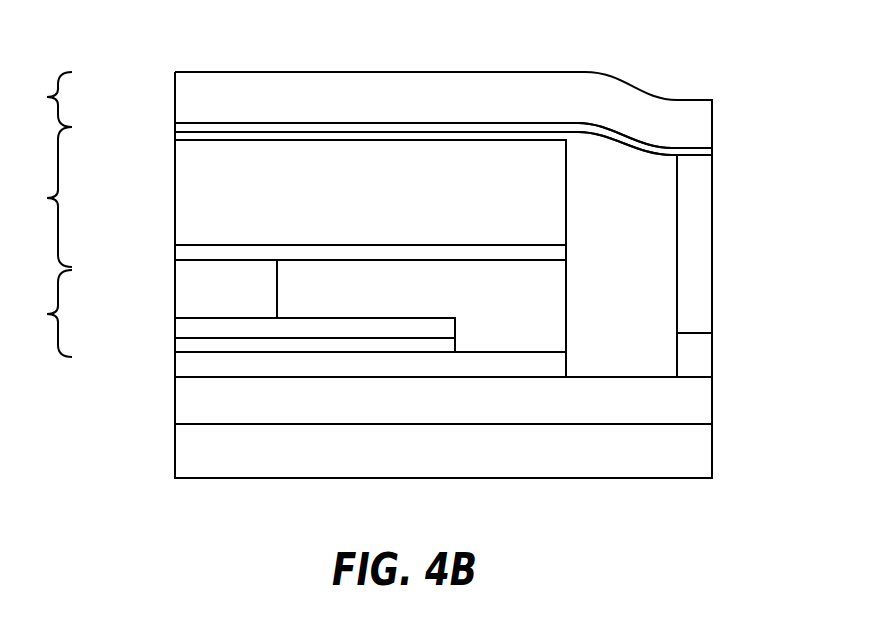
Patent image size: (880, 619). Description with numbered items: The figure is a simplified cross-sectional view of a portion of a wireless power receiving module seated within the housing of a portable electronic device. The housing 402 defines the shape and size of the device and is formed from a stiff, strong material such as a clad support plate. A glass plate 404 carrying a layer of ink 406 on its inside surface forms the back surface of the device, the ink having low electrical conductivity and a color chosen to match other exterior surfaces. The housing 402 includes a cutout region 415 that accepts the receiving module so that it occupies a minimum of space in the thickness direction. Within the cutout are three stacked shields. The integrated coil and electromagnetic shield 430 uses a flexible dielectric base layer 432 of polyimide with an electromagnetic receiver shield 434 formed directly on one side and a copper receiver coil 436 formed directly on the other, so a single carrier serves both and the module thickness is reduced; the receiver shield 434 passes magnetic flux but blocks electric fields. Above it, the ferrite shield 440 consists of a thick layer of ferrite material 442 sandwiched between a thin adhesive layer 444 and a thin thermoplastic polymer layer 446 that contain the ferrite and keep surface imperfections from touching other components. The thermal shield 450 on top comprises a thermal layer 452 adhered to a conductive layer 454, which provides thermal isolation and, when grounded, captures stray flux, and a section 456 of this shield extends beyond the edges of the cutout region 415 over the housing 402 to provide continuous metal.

The housing 402 is at (712, 268).
The glass plate 404 is at (712, 452).
The layer of ink 406 is at (712, 405).
The cutout region 415 is at (598, 282).
The integrated coil and electromagnetic shield 430 is at (41, 313).
The flexible dielectric base layer 432 is at (175, 328).
The electromagnetic receiver shield 434 is at (175, 348).
The copper receiver coil 436 is at (175, 292).
The ferrite shield 440 is at (41, 197).
The ferrite material layer 442 is at (175, 204).
The adhesive layer 444 is at (175, 255).
The thermoplastic polymer layer 446 is at (175, 140).
The thermal shield 450 is at (41, 99).
The thermal layer 452 is at (175, 93).
The conductive layer 454 is at (175, 123).
The section of thermal shield 456 is at (612, 112).